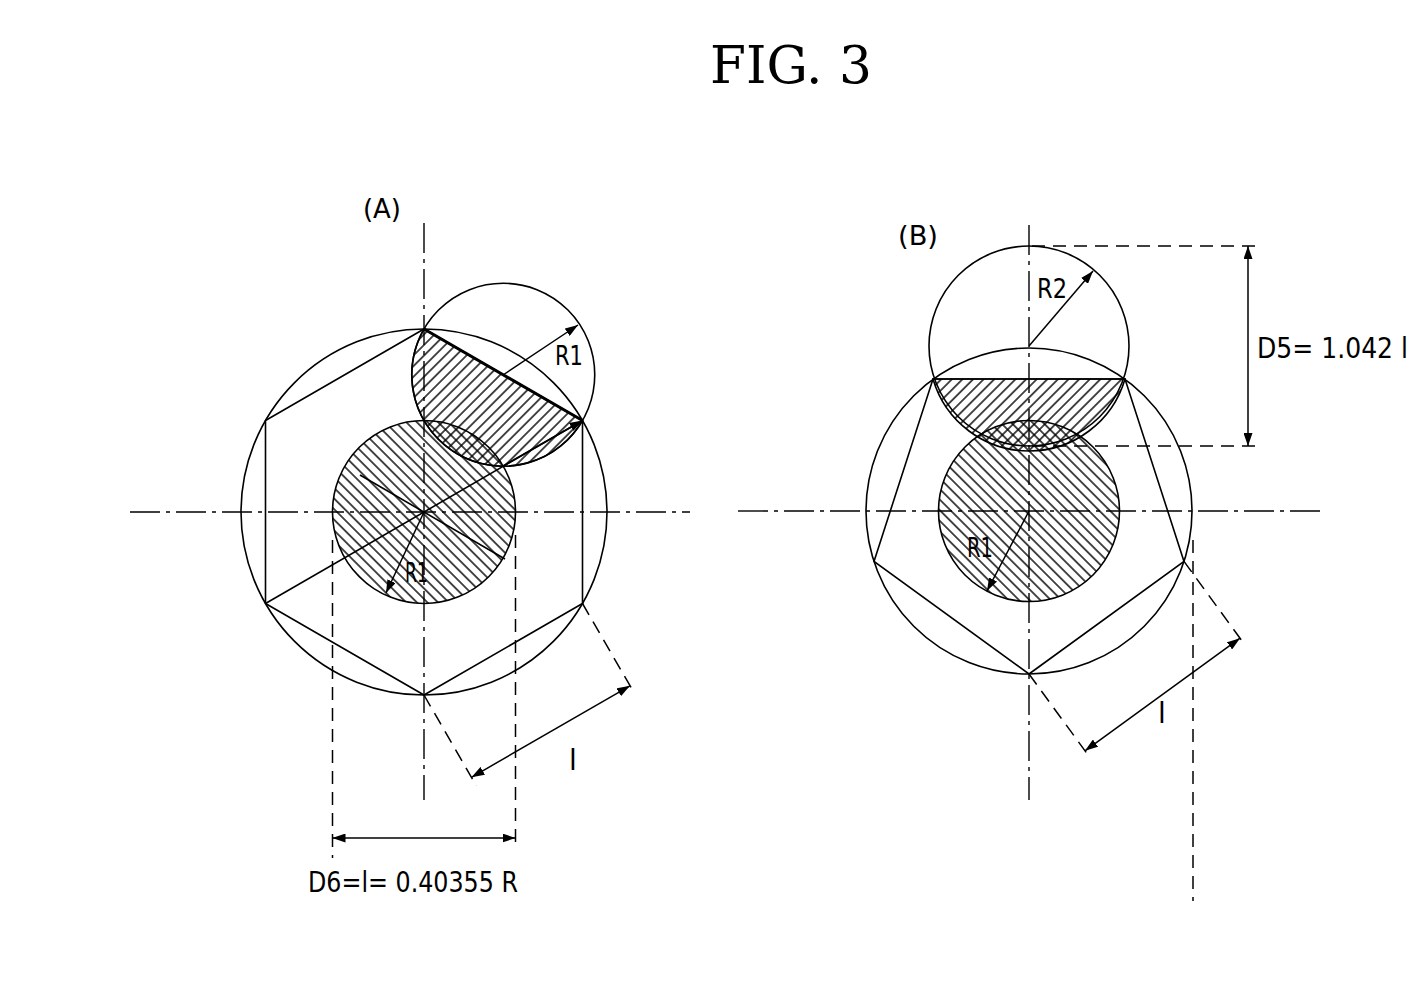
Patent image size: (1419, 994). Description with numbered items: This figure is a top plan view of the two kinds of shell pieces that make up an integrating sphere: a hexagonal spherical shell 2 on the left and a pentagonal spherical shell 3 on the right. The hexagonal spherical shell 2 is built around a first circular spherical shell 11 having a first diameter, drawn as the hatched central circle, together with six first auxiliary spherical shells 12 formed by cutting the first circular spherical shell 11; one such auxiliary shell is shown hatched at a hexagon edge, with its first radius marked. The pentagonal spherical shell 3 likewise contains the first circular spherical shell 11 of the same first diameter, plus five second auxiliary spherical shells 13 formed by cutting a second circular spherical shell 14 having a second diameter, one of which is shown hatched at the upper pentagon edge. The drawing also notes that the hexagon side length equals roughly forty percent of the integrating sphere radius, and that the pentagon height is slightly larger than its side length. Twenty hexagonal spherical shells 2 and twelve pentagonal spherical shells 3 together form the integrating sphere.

The hexagonal spherical shell 2 is at (303, 395).
The pentagonal spherical shell 3 is at (920, 415).
The first circular spherical shell 11 is at (379, 427).
The first auxiliary spherical shell 12 is at (495, 368).
The second auxiliary spherical shell 13 is at (1075, 378).
The second circular spherical shell 14 is at (1004, 247).